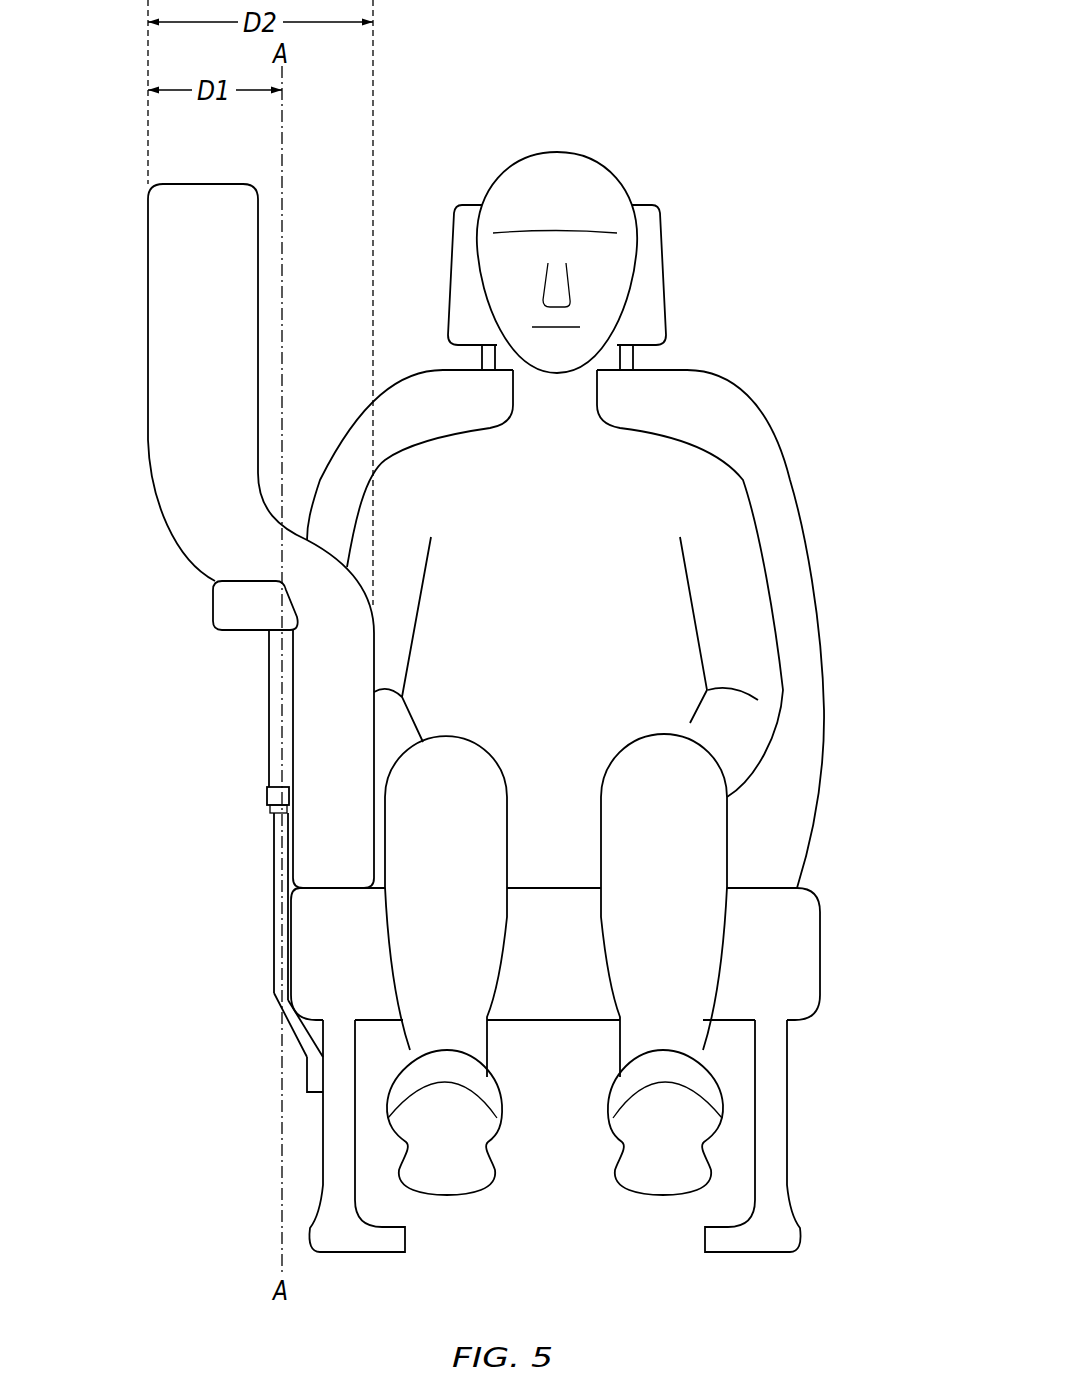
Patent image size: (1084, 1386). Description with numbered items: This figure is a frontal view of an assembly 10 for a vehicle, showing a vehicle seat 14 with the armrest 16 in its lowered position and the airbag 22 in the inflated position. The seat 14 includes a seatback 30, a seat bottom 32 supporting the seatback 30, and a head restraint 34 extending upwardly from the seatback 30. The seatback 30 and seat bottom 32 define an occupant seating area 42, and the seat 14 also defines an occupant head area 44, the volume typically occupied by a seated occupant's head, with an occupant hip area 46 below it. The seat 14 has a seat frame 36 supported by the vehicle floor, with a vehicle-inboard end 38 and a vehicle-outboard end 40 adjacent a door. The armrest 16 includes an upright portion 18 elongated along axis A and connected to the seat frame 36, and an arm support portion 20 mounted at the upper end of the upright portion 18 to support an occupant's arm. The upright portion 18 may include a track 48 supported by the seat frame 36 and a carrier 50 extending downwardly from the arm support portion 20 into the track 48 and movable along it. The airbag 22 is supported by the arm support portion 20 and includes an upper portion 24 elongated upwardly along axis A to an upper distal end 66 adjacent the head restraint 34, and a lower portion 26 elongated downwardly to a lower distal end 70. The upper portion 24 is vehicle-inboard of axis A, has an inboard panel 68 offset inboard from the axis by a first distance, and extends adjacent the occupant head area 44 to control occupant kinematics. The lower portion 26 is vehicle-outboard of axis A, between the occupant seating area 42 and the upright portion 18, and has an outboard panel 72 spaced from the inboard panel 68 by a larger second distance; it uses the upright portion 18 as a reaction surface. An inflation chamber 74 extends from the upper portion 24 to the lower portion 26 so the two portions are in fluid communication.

The assembly 10 is at (838, 268).
The vehicle seat 14 is at (816, 565).
The armrest 16 is at (199, 598).
The upright portion 18 is at (253, 966).
The arm support portion 20 is at (213, 610).
The airbag 22 is at (280, 508).
The upper portion 24 is at (160, 257).
The lower portion 26 is at (340, 736).
The seatback 30 is at (612, 622).
The seat bottom 32 is at (605, 954).
The head restraint 34 is at (651, 250).
The seat frame 36 is at (604, 1136).
The vehicle-inboard end 38 is at (323, 1078).
The vehicle-outboard end 40 is at (788, 1080).
The occupant seating area 42 is at (761, 483).
The occupant head area 44 is at (421, 267).
The occupant hip area 46 is at (380, 817).
The track 48 is at (283, 868).
The carrier 50 is at (270, 703).
The upper distal end 66 is at (210, 183).
The inboard panel 68 is at (147, 322).
The lower distal end 70 is at (332, 890).
The outboard panel 72 is at (375, 648).
The inflation chamber 74 is at (219, 357).